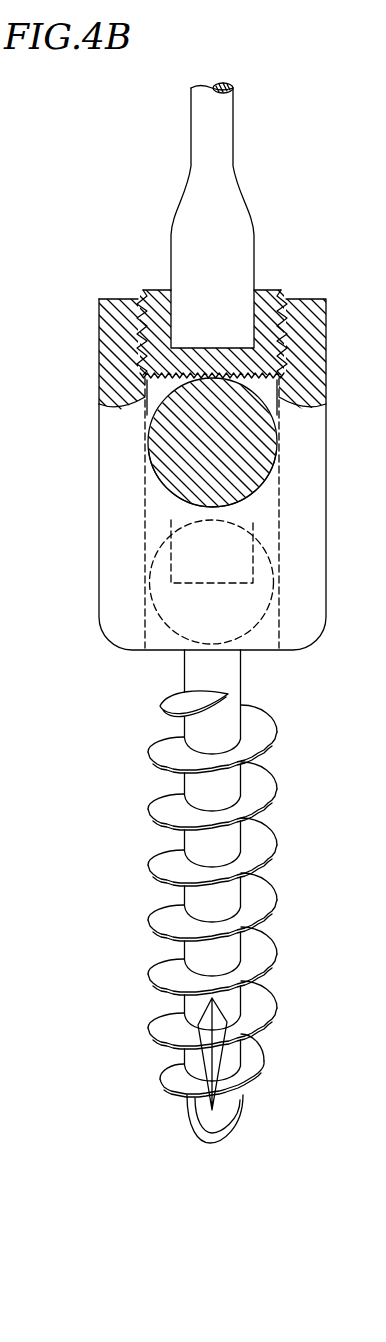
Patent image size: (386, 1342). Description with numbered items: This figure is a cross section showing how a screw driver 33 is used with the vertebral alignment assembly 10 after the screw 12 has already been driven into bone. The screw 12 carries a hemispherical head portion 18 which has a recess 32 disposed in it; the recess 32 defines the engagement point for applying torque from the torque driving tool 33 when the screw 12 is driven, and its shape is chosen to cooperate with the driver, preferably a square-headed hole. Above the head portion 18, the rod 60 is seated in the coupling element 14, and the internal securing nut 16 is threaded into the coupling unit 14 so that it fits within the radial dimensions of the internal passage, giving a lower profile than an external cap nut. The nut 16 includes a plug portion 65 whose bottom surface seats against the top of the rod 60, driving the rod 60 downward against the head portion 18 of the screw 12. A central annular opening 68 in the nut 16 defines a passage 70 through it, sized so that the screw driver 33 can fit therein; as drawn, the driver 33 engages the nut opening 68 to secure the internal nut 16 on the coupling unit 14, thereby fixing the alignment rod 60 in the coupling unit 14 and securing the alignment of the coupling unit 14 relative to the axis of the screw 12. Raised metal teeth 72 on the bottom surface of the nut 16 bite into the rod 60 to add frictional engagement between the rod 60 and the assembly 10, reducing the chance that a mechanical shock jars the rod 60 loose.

The vertebral alignment assembly 10 is at (84, 349).
The screw 12 is at (156, 786).
The coupling element 14 is at (97, 512).
The internal securing nut 16 is at (126, 291).
The hemispherical head portion 18 is at (232, 614).
The recess 32 is at (215, 515).
The screw driver 33 is at (235, 125).
The rod 60 is at (228, 451).
The plug portion 65 is at (236, 358).
The central annular opening 68 is at (171, 290).
The passage 70 is at (278, 305).
The raised metal teeth 72 is at (145, 395).